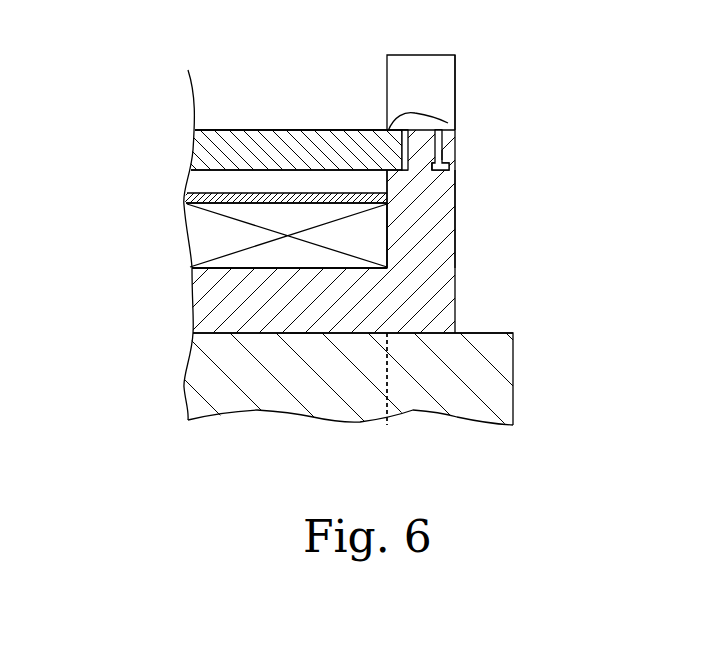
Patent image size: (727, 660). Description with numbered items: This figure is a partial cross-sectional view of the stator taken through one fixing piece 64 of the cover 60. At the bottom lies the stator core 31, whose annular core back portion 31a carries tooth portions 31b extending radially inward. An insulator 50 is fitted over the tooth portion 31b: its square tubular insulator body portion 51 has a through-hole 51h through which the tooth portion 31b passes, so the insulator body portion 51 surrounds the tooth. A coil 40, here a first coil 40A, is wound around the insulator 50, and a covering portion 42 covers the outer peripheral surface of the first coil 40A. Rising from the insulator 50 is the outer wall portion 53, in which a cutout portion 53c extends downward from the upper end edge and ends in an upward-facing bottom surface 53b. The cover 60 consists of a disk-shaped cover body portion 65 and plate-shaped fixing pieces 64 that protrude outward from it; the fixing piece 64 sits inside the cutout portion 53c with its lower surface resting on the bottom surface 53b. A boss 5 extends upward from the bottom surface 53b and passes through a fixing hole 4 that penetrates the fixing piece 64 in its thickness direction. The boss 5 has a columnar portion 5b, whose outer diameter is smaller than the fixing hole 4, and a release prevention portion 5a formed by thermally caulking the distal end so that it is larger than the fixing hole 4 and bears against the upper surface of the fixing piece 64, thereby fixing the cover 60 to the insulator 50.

The cover 60 is at (250, 113).
The cover body portion 65 is at (301, 148).
The cutout portion 53c is at (437, 73).
The release prevention portion 5a is at (425, 115).
The boss 5 is at (458, 115).
The columnar portion 5b is at (438, 145).
The fixing piece 64 is at (440, 157).
The bottom surface 53b is at (447, 165).
The fixing hole 4 is at (428, 190).
The outer wall portion 53 is at (440, 240).
The insulator 50 is at (459, 312).
The stator core 31 is at (517, 368).
The covering portion 42 is at (188, 200).
The coil 40 is at (200, 231).
The first coil 40A is at (194, 248).
The insulator body portion 51 is at (263, 310).
The through-hole 51h is at (300, 334).
The tooth portion 31b is at (340, 388).
The core back portion 31a is at (462, 397).